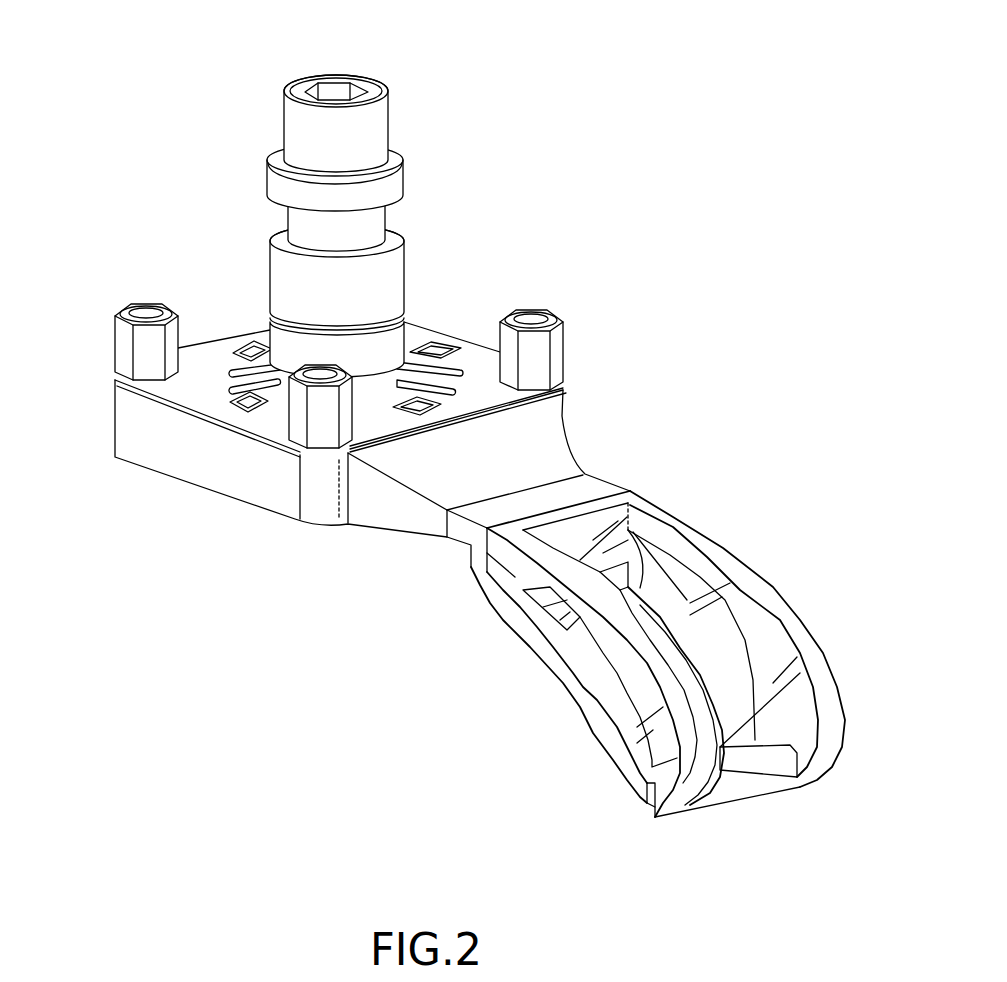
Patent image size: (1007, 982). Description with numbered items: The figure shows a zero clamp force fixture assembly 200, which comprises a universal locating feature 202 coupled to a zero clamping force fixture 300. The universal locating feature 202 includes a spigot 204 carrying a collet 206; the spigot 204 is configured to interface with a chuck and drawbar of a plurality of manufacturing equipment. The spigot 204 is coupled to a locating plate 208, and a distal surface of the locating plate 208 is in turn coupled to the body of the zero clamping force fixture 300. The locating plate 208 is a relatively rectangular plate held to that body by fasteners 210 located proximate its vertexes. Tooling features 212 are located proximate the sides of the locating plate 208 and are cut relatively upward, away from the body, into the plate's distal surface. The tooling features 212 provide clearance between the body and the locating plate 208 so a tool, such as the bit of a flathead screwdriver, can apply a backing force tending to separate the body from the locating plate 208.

The zero clamp force fixture assembly 200 is at (619, 96).
The universal locating feature 202 is at (253, 217).
The spigot 204 is at (384, 113).
The collet 206 is at (397, 183).
The locating plate 208 is at (213, 353).
The fasteners 210 is at (116, 325).
The tooling features 212 is at (487, 414).
The zero clamping force fixture 300 is at (374, 547).